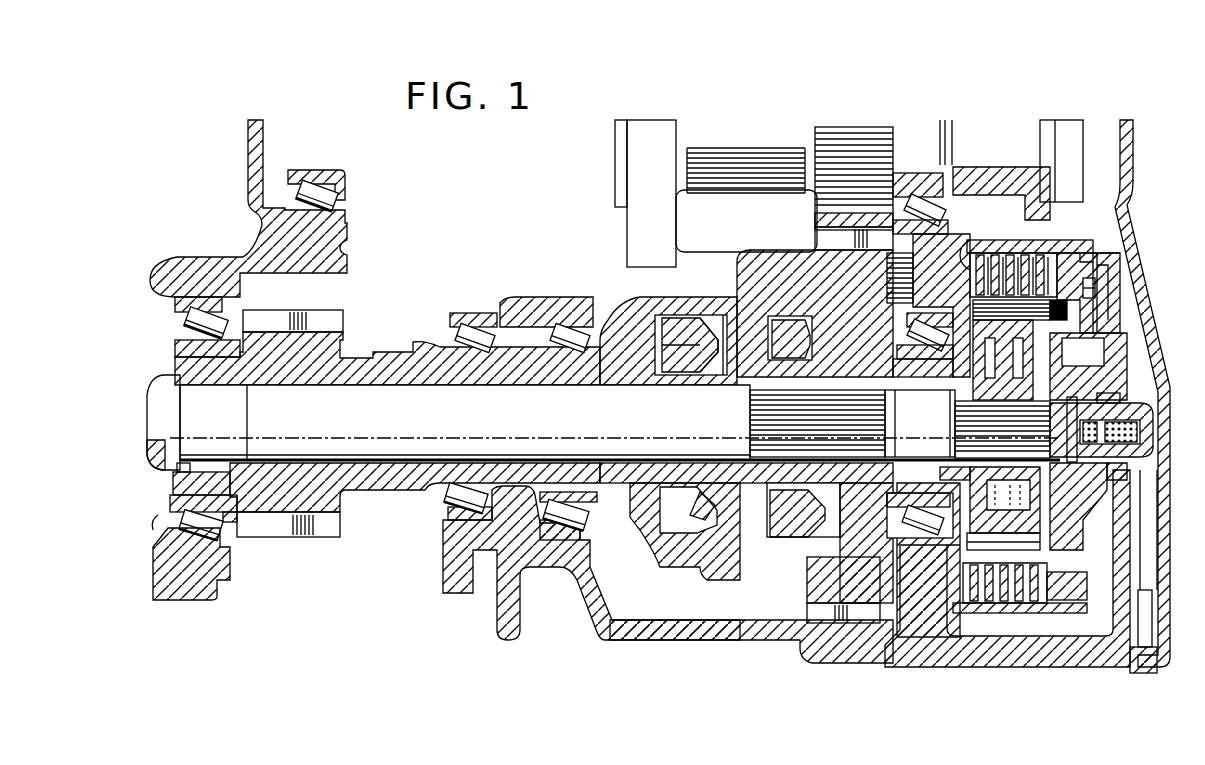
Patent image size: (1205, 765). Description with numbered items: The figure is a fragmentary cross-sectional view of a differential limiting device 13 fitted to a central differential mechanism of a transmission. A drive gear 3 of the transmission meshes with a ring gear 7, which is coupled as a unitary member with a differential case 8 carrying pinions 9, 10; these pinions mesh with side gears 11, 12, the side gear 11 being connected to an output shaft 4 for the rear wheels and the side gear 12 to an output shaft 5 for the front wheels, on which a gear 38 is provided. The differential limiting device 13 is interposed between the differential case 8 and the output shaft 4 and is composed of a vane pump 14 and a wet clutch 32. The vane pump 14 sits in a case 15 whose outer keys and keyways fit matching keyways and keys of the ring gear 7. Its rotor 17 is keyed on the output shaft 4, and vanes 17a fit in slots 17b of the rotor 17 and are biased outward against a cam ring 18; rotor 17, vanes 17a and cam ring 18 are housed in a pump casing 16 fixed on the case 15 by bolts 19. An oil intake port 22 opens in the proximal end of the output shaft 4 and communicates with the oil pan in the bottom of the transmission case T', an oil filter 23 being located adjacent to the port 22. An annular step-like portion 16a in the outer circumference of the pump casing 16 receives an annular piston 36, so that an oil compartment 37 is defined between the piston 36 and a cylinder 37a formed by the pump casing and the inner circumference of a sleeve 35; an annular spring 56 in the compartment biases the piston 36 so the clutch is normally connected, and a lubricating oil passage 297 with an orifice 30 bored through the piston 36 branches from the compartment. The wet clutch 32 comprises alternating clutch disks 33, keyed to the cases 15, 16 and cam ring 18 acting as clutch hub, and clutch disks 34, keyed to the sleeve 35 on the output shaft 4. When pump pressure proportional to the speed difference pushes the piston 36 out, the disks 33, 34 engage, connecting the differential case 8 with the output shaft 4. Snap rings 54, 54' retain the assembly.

The drive gear 3 is at (826, 222).
The output shaft for the rear wheels 4 is at (386, 392).
The output shaft for the front wheels 5 is at (178, 353).
The ring gear 7 is at (825, 262).
The differential case 8 is at (712, 320).
The pinion 9 is at (700, 330).
The pinion 10 is at (702, 528).
The side gear 11 is at (828, 500).
The side gear 12 is at (660, 340).
The differential limiting device 13 is at (1035, 250).
The vane pump 14 is at (1020, 335).
The case 15 is at (918, 392).
The pump casing 16 is at (1108, 350).
The annular step-like portion 16a is at (1100, 298).
The rotor 17 is at (1028, 360).
The vanes 17a is at (1023, 512).
The slots 17b is at (1023, 492).
The cam ring 18 is at (1025, 342).
The bolts 19 is at (975, 330).
The oil intake port 22 is at (1145, 430).
The oil filter 23 is at (1145, 450).
The orifice 30 is at (1108, 350).
The wet clutch 32 is at (1000, 255).
The clutch disks 33 is at (972, 275).
The clutch disks 34 is at (972, 290).
The sleeve 35 is at (1090, 260).
The piston 36 is at (1110, 275).
The oil compartment 37 is at (1100, 288).
The cylinder 37a is at (1120, 255).
The gear 38 is at (320, 315).
The snap ring 54 is at (948, 253).
The snap ring 54' is at (1135, 420).
The annular spring 56 is at (1150, 592).
The lubricating oil passage 297 is at (1120, 300).
The transmission case T' is at (1038, 568).